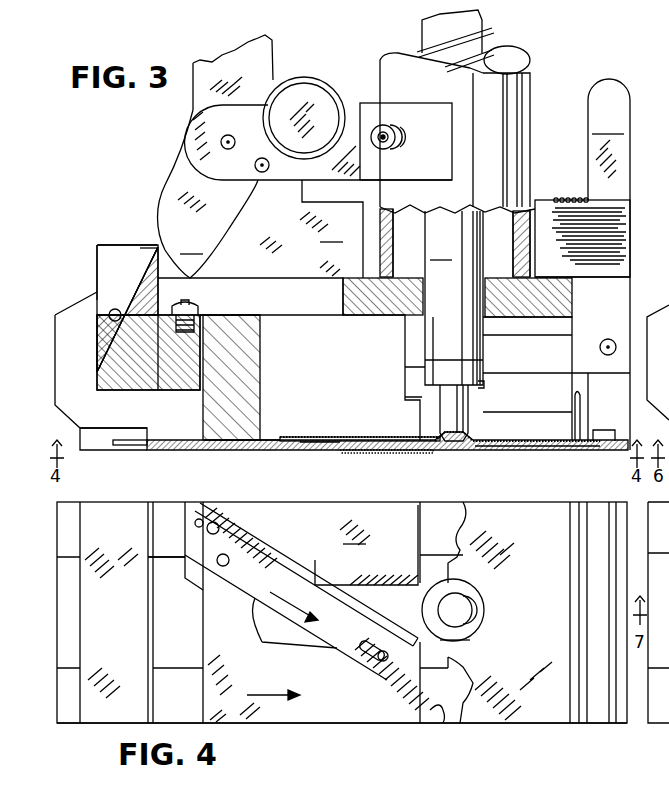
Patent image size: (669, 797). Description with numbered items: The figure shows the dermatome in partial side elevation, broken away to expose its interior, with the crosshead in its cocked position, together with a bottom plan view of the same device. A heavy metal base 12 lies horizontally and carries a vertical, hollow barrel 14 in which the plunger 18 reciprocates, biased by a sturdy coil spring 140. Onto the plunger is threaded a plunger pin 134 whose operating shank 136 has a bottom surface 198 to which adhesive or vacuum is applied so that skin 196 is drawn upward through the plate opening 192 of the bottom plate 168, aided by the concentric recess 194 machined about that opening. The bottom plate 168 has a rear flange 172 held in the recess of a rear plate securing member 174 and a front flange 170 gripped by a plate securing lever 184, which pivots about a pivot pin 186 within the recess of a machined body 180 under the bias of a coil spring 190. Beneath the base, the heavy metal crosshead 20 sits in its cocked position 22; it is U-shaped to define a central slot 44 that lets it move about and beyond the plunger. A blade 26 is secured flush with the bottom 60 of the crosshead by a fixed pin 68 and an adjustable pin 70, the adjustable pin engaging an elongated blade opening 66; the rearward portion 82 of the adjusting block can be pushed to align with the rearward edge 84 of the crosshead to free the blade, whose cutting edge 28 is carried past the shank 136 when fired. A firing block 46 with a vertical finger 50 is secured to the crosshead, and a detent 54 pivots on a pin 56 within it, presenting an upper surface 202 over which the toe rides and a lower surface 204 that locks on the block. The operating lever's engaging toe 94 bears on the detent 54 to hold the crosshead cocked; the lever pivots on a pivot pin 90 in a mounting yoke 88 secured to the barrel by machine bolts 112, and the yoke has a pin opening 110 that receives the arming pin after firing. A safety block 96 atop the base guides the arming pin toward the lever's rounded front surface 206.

In FIG. 3, the base 12 is at (72, 307).
In FIG. 3, the barrel 14 is at (528, 106).
In FIG. 3, the plunger 18 is at (454, 298).
In FIG. 3, the crosshead 20 is at (300, 446).
In FIG. 4, the crosshead 20 is at (305, 718).
In FIG. 3, the cocked position 22 is at (449, 444).
In FIG. 4, the cocked position 22 is at (443, 724).
In FIG. 3, the blade 26 is at (332, 447).
In FIG. 4, the blade 26 is at (338, 648).
In FIG. 3, the cutting edge 28 is at (370, 412).
In FIG. 4, the cutting edge 28 is at (307, 612).
In FIG. 3, the central slot 44 is at (555, 352).
In FIG. 4, the central slot 44 is at (258, 636).
In FIG. 3, the firing block 46 is at (97, 250).
In FIG. 3, the vertical finger 50 is at (120, 246).
In FIG. 3, the detent 54 is at (141, 248).
In FIG. 3, the pivot pin 56 is at (105, 275).
In FIG. 3, the bottom of the crosshead 60 is at (276, 441).
In FIG. 4, the bottom of the crosshead 60 is at (366, 545).
In FIG. 4, the elongated blade opening 66 is at (372, 660).
In FIG. 4, the fixed pin 68 is at (385, 662).
In FIG. 4, the adjustable pin 70 is at (230, 565).
In FIG. 4, the rearward portion 82 is at (224, 490).
In FIG. 4, the rearward edge 84 is at (203, 602).
In FIG. 3, the mounting yoke 88 is at (355, 104).
In FIG. 3, the pivot pin 90 is at (220, 140).
In FIG. 3, the engaging toe 94 is at (208, 194).
In FIG. 3, the safety block 96 is at (311, 229).
In FIG. 3, the pin opening 110 is at (268, 168).
In FIG. 3, the machine bolt 112 is at (390, 132).
In FIG. 3, the plunger pin 134 is at (484, 385).
In FIG. 4, the plunger pin 134 is at (470, 588).
In FIG. 3, the operating shank 136 is at (463, 411).
In FIG. 3, the coil spring 140 is at (487, 14).
In FIG. 3, the bottom plate 168 is at (535, 450).
In FIG. 3, the front flange 170 is at (610, 447).
In FIG. 3, the rear flange 172 is at (130, 447).
In FIG. 3, the rear plate securing member 174 is at (103, 452).
In FIG. 3, the machined body 180 is at (622, 214).
In FIG. 3, the plate securing lever 184 is at (609, 139).
In FIG. 3, the pivot pin 186 is at (610, 339).
In FIG. 3, the coil spring 190 is at (570, 197).
In FIG. 4, the plate opening 192 is at (472, 604).
In FIG. 3, the concentric recess 194 is at (478, 450).
In FIG. 4, the concentric recess 194 is at (474, 620).
In FIG. 3, the skin 196 is at (379, 453).
In FIG. 4, the bottom surface 198 is at (470, 638).
In FIG. 3, the upper surface 202 is at (112, 308).
In FIG. 3, the lower surface 204 is at (122, 357).
In FIG. 3, the front surface 206 is at (296, 55).